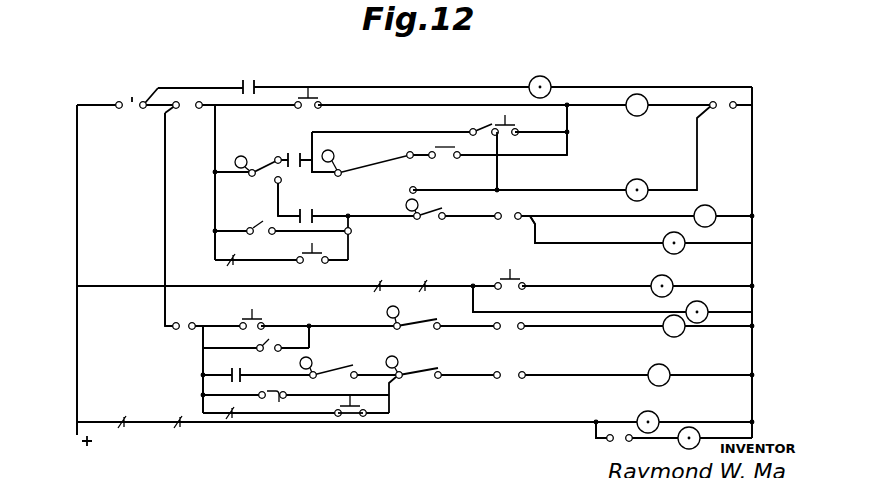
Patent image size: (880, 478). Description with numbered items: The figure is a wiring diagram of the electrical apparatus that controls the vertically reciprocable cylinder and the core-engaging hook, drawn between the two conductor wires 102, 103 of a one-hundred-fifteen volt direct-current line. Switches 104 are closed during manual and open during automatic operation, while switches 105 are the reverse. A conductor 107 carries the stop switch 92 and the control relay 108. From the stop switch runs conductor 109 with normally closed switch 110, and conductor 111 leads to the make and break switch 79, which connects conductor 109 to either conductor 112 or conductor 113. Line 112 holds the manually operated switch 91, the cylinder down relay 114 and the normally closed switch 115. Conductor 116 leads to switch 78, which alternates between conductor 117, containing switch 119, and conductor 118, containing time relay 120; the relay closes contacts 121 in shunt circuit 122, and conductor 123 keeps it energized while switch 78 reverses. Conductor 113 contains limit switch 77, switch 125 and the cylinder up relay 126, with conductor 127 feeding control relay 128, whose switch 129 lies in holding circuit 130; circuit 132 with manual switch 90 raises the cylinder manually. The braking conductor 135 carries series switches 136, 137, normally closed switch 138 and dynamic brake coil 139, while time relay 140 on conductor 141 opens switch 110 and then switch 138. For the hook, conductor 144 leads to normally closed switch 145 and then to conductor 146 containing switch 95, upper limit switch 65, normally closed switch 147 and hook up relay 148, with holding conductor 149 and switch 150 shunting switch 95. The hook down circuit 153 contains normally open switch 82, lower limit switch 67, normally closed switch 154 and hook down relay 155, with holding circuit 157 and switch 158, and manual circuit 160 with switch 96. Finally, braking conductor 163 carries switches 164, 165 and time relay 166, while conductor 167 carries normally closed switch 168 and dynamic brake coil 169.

The upper limit switch 65 is at (418, 325).
The lower limit switch 67 is at (426, 378).
The limit switch 77 is at (435, 219).
The make and break switch 78 is at (376, 166).
The make and break switch 79 is at (276, 188).
The normally open switch 82 is at (345, 358).
The manually operable switch 90 is at (307, 262).
The manually operated switch 91 is at (301, 108).
The stop switch 92 is at (119, 108).
The manually operated normally open switch 95 is at (263, 320).
The manually operated switch 96 is at (350, 424).
The conductor wire 102 is at (77, 226).
The conductor wire 103 is at (752, 170).
The switch 104 is at (233, 413).
The switch 105 is at (243, 372).
The conductor 107 is at (352, 86).
The control relay 108 is at (548, 78).
The conductor 109 is at (215, 138).
The normally closed switch 110 is at (184, 100).
The conductor 111 is at (235, 160).
The conductor 112 is at (383, 106).
The conductor 113 is at (360, 219).
The cylinder down relay 114 is at (641, 115).
The normally closed switch 115 is at (714, 108).
The conductor 116 is at (311, 173).
The conductor 117 is at (569, 133).
The conductor 118 is at (570, 188).
The switch 119 is at (436, 159).
The time relay 120 is at (651, 170).
The normally open switch contacts 121 is at (481, 126).
The shunt circuit 122 is at (386, 133).
The conductor 123 is at (498, 165).
The switch 125 is at (498, 223).
The cylinder up relay 126 is at (714, 192).
The conductor 127 is at (541, 243).
The control relay 128 is at (663, 240).
The normally open switch 129 is at (262, 233).
The holding circuit 130 is at (220, 230).
The circuit 132 is at (253, 262).
The conductor 135 is at (570, 272).
The switch 136 is at (380, 268).
The switch 137 is at (426, 280).
The normally closed switch 138 is at (515, 267).
The dynamic brake coil 139 is at (656, 278).
The time relay 140 is at (712, 298).
The conductor 141 is at (586, 311).
The conductor 144 is at (165, 264).
The normally closed switch 145 is at (200, 305).
The conductor 146 is at (324, 324).
The normally closed switch 147 is at (515, 330).
The hook up relay 148 is at (681, 334).
The conductor 149 is at (311, 340).
The normally open switch 150 is at (258, 346).
The hook down circuit 153 is at (566, 378).
The normally closed switch 154 is at (497, 383).
The hook down relay 155 is at (670, 383).
The holding circuit 157 is at (333, 387).
The switch 158 is at (279, 401).
The circuit 160 is at (270, 424).
The conductor 163 is at (470, 424).
The switch 164 is at (122, 429).
The switch 165 is at (178, 429).
The time relay 166 is at (658, 414).
The conductor 167 is at (640, 440).
The normally closed switch 168 is at (610, 444).
The dynamic brake coil 169 is at (697, 432).